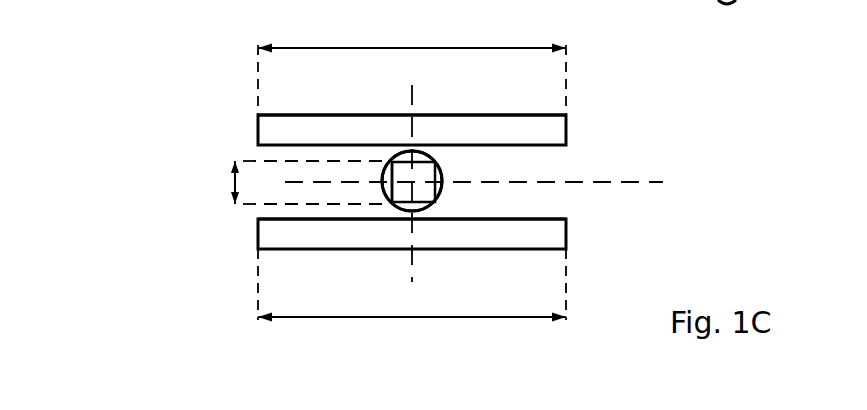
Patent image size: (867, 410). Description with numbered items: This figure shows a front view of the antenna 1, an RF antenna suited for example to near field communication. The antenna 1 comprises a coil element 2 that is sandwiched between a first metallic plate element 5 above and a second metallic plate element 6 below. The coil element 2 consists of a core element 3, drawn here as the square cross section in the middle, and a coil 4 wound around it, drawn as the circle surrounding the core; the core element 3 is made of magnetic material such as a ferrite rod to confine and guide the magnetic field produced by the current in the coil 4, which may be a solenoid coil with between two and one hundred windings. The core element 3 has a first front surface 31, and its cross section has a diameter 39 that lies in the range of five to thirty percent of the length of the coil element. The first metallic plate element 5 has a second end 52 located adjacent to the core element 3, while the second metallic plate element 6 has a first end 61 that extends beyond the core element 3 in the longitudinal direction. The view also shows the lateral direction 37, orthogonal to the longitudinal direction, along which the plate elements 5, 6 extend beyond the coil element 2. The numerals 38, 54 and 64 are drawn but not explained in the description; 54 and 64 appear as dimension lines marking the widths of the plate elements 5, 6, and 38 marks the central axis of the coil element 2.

The antenna 1 is at (110, 113).
The coil element 2 is at (453, 166).
The core element 3 is at (395, 184).
The coil 4 is at (440, 188).
The first metallic plate element 5 is at (503, 113).
The second metallic plate element 6 is at (502, 250).
The first front surface 31 is at (398, 174).
The lateral direction 37 is at (655, 183).
The vertical axis 38 is at (414, 97).
The diameter 39 is at (233, 186).
The second end 52 is at (296, 127).
The first plate length 54 is at (329, 47).
The first end 61 is at (318, 240).
The second plate length 64 is at (382, 320).